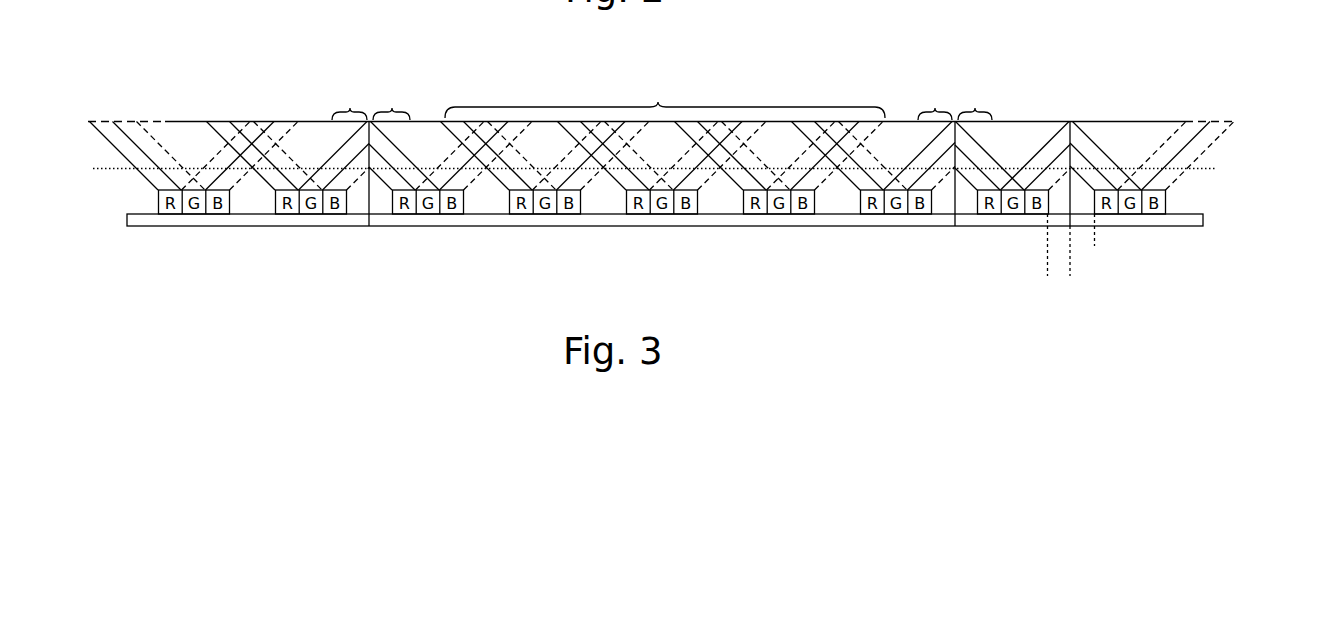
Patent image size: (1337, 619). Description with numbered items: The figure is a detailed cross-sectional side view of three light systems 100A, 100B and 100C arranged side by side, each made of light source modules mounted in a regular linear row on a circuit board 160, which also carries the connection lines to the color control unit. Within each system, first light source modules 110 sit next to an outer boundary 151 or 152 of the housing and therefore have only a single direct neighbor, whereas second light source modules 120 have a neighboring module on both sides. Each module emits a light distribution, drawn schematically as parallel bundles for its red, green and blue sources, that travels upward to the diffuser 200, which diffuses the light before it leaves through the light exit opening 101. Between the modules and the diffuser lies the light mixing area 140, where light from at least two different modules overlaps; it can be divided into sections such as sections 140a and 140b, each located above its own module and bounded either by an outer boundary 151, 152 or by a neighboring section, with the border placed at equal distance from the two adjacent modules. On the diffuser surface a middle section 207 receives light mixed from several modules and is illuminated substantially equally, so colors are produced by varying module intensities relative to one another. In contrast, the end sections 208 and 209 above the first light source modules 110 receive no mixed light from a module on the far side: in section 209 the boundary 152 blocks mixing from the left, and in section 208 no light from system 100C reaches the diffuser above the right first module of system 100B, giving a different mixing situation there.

The light system 100A is at (150, 62).
The light system 100B is at (728, 260).
The light system 100C is at (961, 271).
The light exit opening 101 is at (435, 118).
The first light source module 110 is at (415, 216).
The second light source module 120 is at (543, 216).
The light mixing area 140 is at (1236, 145).
The light mixing area section 140a is at (1002, 135).
The light mixing area section 140b is at (1120, 140).
The outer boundary 151 is at (935, 137).
The outer boundary 152 is at (350, 137).
The circuit board 160 is at (1200, 203).
The diffuser 200 is at (1148, 122).
The middle section 207 is at (665, 97).
The end section 208 is at (638, 100).
The end section 209 is at (687, 100).